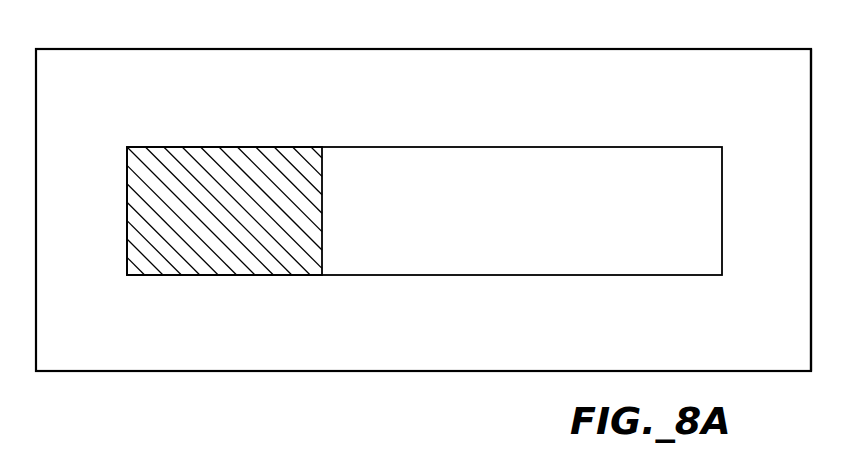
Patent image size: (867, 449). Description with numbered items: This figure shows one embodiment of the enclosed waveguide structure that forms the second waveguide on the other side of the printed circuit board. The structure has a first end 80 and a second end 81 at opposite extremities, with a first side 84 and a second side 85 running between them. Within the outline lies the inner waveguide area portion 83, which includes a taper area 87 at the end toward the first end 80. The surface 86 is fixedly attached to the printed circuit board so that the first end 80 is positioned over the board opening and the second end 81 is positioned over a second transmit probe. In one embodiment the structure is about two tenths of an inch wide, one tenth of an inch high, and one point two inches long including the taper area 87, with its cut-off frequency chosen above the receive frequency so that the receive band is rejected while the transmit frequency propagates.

The first end 80 is at (36, 89).
The second end 81 is at (811, 70).
The inner waveguide area portion 83 is at (513, 178).
The first side 84 is at (638, 49).
The second side 85 is at (392, 372).
The surface 86 is at (340, 88).
The taper area 87 is at (231, 183).